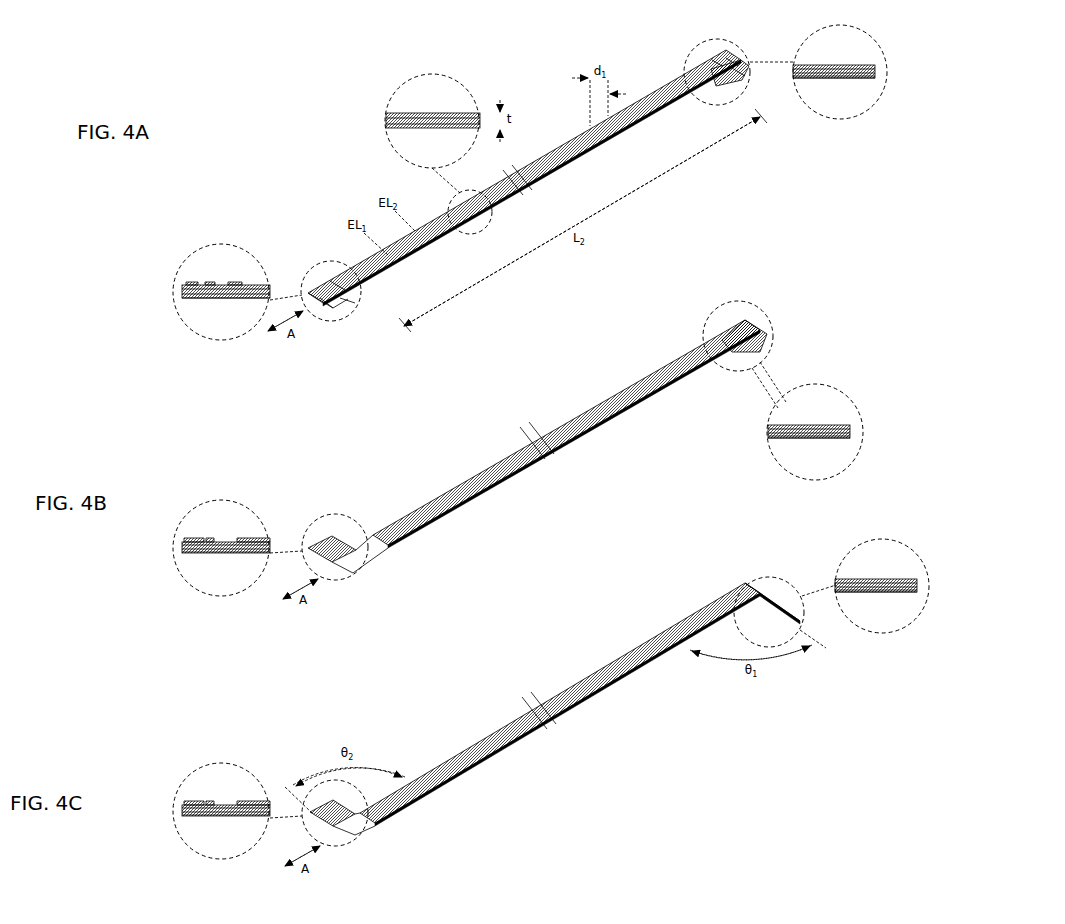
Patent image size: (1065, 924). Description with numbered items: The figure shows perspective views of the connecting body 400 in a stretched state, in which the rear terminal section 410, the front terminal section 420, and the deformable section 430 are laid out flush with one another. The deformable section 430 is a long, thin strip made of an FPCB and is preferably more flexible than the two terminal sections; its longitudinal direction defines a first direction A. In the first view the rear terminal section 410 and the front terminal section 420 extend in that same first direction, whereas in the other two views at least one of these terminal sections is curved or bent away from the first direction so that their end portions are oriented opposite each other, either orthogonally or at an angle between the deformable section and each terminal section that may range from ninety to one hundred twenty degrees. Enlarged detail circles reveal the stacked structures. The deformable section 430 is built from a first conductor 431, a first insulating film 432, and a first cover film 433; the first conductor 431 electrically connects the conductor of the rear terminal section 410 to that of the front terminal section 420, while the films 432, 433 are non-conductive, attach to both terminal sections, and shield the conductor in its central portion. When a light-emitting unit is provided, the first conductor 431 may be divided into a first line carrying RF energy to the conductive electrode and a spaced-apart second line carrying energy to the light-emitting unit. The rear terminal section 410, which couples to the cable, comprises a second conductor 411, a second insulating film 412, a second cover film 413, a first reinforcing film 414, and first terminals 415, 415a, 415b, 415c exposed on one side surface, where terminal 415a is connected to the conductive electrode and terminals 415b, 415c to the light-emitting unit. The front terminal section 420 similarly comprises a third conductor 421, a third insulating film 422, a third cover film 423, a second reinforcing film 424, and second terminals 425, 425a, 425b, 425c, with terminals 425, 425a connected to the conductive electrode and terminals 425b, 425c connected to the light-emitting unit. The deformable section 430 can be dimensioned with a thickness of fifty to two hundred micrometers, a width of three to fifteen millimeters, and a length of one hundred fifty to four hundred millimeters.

In FIG. 4A, the connecting body 400 is at (518, 162).
In FIG. 4B, the connecting body 400 is at (529, 424).
In FIG. 4C, the connecting body 400 is at (553, 712).
In FIG. 4A, the rear terminal section 410 is at (703, 56).
In FIG. 4B, the rear terminal section 410 is at (727, 321).
In FIG. 4C, the rear terminal section 410 is at (727, 585).
In FIG. 4A, the second conductor 411 is at (840, 65).
In FIG. 4B, the second conductor 411 is at (815, 425).
In FIG. 4C, the second conductor 411 is at (882, 579).
In FIG. 4A, the second insulating film 412 is at (815, 78).
In FIG. 4B, the second insulating film 412 is at (790, 438).
In FIG. 4C, the second insulating film 412 is at (855, 592).
In FIG. 4A, the second cover film 413 is at (820, 65).
In FIG. 4B, the second cover film 413 is at (797, 425).
In FIG. 4C, the second cover film 413 is at (864, 579).
In FIG. 4A, the first reinforcing film 414 is at (840, 78).
In FIG. 4B, the first reinforcing film 414 is at (815, 438).
In FIG. 4C, the first reinforcing film 414 is at (882, 592).
In FIG. 4A, the first terminals 415 is at (860, 65).
In FIG. 4B, the first terminals 415 is at (835, 425).
In FIG. 4C, the first terminals 415 is at (900, 579).
In FIG. 4A, the first terminal 415a is at (730, 60).
In FIG. 4A, the first terminal 415b is at (715, 56).
In FIG. 4A, the first terminal 415c is at (740, 68).
In FIG. 4A, the front terminal section 420 is at (322, 264).
In FIG. 4B, the front terminal section 420 is at (323, 528).
In FIG. 4C, the front terminal section 420 is at (376, 844).
In FIG. 4A, the third conductor 421 is at (231, 285).
In FIG. 4B, the third conductor 421 is at (231, 542).
In FIG. 4C, the third conductor 421 is at (231, 805).
In FIG. 4A, the third insulating film 422 is at (243, 299).
In FIG. 4B, the third insulating film 422 is at (243, 554).
In FIG. 4C, the third insulating film 422 is at (243, 817).
In FIG. 4A, the third cover film 423 is at (243, 286).
In FIG. 4B, the third cover film 423 is at (243, 543).
In FIG. 4C, the third cover film 423 is at (243, 806).
In FIG. 4A, the second reinforcing film 424 is at (203, 298).
In FIG. 4B, the second reinforcing film 424 is at (203, 553).
In FIG. 4C, the second reinforcing film 424 is at (203, 816).
In FIG. 4A, the second terminals 425 is at (213, 287).
In FIG. 4B, the second terminals 425 is at (213, 543).
In FIG. 4C, the second terminals 425 is at (213, 806).
In FIG. 4A, the second terminal 425a is at (338, 268).
In FIG. 4A, the second terminal 425b is at (338, 314).
In FIG. 4A, the second terminal 425c is at (355, 303).
In FIG. 4A, the deformable section 430 is at (556, 142).
In FIG. 4B, the deformable section 430 is at (576, 407).
In FIG. 4C, the deformable section 430 is at (574, 673).
In FIG. 4A, the first conductor 431 is at (448, 113).
In FIG. 4A, the first insulating film 432 is at (426, 128).
In FIG. 4A, the first cover film 433 is at (418, 113).